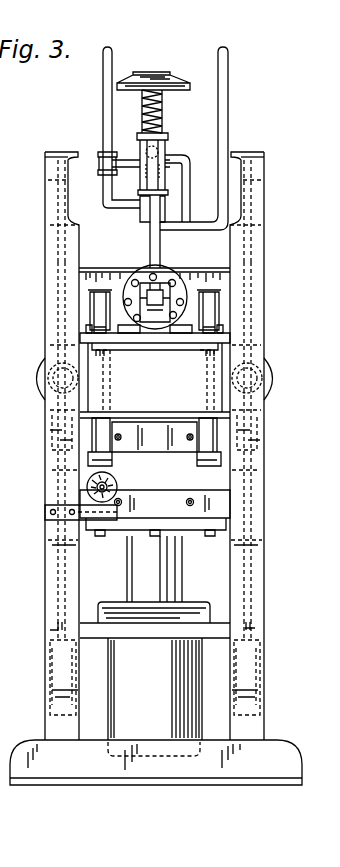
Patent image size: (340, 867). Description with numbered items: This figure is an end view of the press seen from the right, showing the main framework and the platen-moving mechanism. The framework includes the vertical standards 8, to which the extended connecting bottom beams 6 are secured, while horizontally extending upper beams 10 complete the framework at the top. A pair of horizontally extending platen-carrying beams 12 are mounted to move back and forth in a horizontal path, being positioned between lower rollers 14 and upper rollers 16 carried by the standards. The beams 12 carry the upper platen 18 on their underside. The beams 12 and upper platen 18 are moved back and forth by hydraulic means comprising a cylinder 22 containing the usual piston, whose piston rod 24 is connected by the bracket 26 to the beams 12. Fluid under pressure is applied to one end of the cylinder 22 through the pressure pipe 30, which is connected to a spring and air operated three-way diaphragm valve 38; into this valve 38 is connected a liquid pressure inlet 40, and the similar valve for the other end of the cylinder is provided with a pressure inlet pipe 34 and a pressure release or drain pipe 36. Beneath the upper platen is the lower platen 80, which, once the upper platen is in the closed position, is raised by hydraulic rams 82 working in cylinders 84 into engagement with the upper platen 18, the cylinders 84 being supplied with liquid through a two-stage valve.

The connecting bottom beams 6 is at (44, 672).
The vertical standards 8 is at (258, 484).
The upper beams 10 is at (56, 170).
The platen-carrying beams 12 is at (100, 369).
The lower rollers 14 is at (100, 432).
The upper rollers 16 is at (98, 292).
The upper platen 18 is at (158, 437).
The cylinder 22 is at (132, 277).
The piston rod 24 is at (168, 278).
The bracket 26 is at (153, 338).
The pressure pipe 30 is at (157, 250).
The pressure inlet pipe 34 is at (128, 213).
The pressure release or drain pipe 36 is at (228, 104).
The diaphragm valve 38 is at (152, 75).
The liquid pressure inlet 40 is at (103, 102).
The lower platen 80 is at (162, 510).
The hydraulic rams 82 is at (170, 585).
The cylinders 84 is at (156, 695).